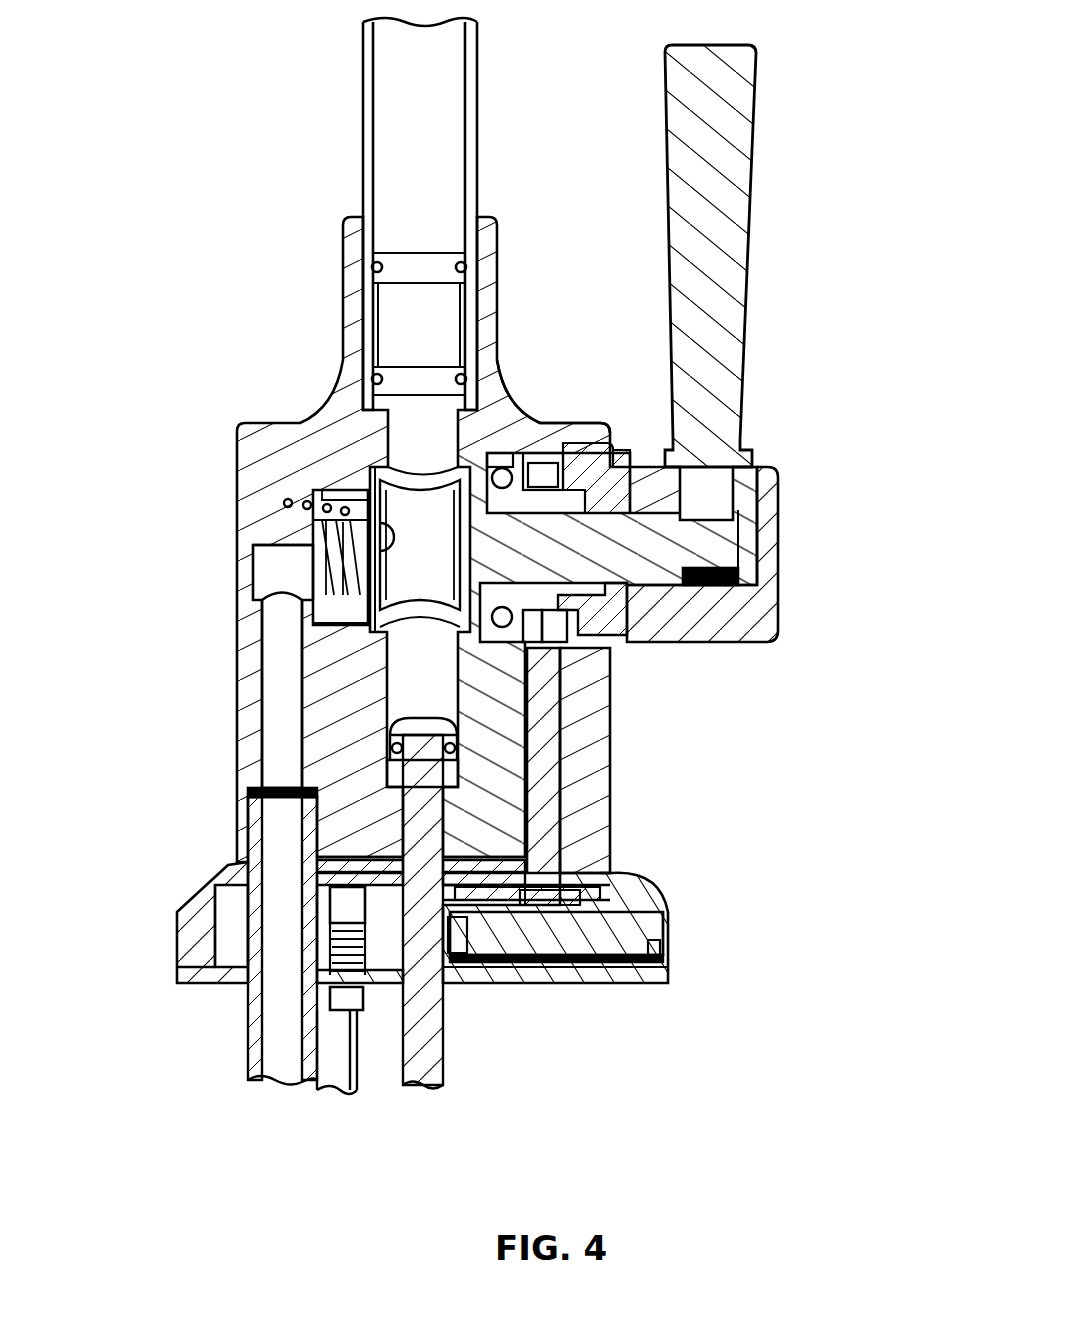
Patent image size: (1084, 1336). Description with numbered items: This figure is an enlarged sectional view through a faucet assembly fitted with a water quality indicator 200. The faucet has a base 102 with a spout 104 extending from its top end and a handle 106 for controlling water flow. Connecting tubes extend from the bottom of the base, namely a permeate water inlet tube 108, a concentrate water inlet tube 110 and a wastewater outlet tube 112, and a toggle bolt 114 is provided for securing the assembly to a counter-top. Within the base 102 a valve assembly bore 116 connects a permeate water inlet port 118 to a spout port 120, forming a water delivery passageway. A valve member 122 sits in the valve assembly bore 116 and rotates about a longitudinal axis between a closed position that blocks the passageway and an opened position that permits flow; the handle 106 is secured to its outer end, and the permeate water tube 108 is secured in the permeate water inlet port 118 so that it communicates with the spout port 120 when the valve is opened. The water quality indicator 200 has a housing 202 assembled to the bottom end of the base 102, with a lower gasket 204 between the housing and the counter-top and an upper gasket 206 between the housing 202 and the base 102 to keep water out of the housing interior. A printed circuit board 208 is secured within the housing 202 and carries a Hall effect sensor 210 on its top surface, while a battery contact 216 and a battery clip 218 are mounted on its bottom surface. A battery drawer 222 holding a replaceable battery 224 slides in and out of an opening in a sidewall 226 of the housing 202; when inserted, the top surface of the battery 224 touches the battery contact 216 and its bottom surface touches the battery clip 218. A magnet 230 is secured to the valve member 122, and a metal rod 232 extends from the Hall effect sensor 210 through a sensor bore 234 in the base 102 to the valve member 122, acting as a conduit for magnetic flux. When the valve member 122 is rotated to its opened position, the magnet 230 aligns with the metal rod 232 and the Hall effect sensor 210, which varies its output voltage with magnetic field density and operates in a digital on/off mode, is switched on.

The base 102 is at (235, 600).
The spout 104 is at (478, 118).
The handle 106 is at (737, 295).
The permeate water inlet tube 108 is at (255, 1048).
The concentrate water inlet tube 110 is at (323, 1092).
The wastewater outlet tube 112 is at (360, 1008).
The toggle bolt 114 is at (445, 1066).
The valve assembly bore 116 is at (370, 467).
The permeate water inlet port 118 is at (258, 707).
The spout port 120 is at (513, 432).
The valve member 122 is at (752, 545).
The water quality indicator 200 is at (705, 997).
The housing 202 is at (180, 940).
The lower gasket 204 is at (177, 983).
The upper gasket 206 is at (597, 863).
The printed circuit board 208 is at (493, 984).
The Hall effect sensor 210 is at (590, 900).
The battery contact 216 is at (535, 984).
The battery clip 218 is at (603, 984).
The battery drawer 222 is at (660, 957).
The battery 224 is at (645, 930).
The sidewall 226 is at (185, 957).
The magnet 230 is at (640, 440).
The metal rod 232 is at (565, 740).
The sensor bore 234 is at (565, 712).